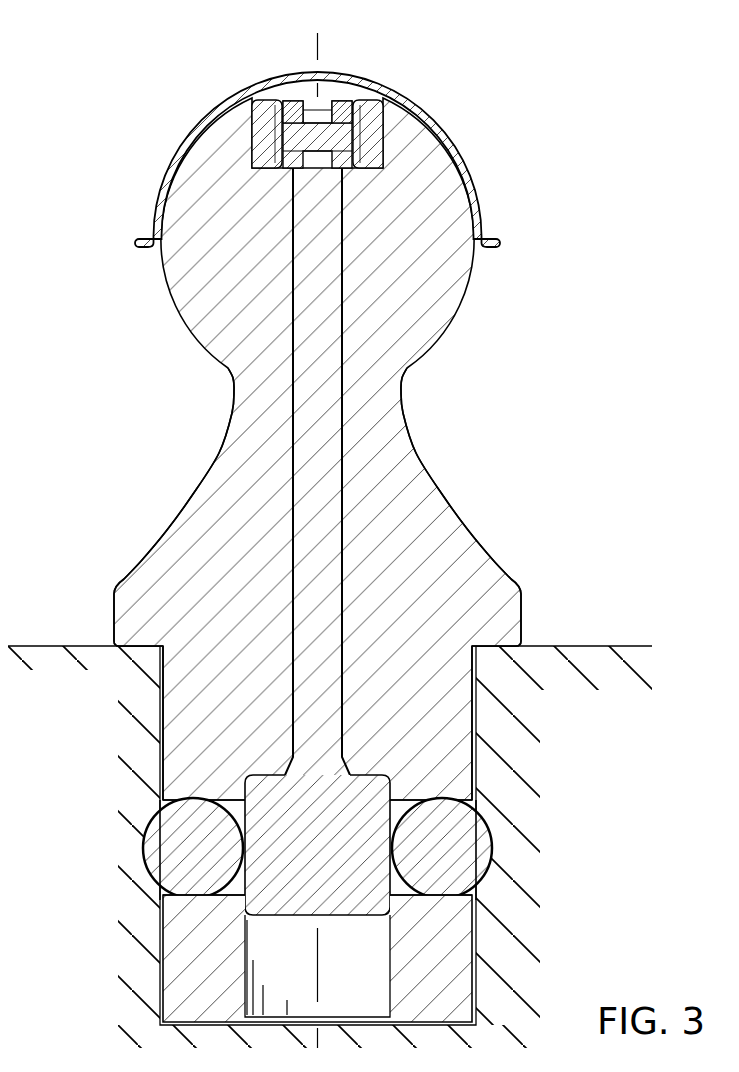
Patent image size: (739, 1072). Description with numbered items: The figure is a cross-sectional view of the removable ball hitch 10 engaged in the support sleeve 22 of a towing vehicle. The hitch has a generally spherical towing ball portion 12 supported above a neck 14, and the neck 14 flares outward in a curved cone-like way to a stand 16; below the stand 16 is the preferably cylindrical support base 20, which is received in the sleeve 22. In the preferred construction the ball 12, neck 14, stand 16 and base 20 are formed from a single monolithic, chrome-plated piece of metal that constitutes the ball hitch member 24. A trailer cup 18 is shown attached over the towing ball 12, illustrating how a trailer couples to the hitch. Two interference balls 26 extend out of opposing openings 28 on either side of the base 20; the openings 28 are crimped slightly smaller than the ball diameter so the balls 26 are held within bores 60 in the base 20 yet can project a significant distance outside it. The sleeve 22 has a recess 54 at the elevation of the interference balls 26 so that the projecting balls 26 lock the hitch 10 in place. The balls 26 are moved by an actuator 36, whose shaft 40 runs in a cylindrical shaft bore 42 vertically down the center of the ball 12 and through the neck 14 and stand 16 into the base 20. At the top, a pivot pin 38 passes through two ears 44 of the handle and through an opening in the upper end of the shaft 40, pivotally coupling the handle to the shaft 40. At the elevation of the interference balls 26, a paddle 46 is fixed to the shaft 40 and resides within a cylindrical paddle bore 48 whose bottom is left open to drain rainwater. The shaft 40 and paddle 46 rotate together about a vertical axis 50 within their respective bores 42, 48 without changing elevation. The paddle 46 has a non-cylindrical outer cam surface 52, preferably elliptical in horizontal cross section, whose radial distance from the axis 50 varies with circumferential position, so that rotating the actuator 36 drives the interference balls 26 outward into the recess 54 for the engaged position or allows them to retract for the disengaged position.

The removable ball hitch 10 is at (339, 534).
The towing ball portion 12 is at (440, 206).
The neck 14 is at (392, 378).
The stand 16 is at (493, 604).
The cup 18 is at (157, 190).
The support base 20 is at (180, 717).
The support sleeve 22 is at (548, 708).
The ball hitch member 24 is at (208, 455).
The interference balls 26 is at (180, 828).
The openings 28 is at (180, 797).
The actuator 36 is at (303, 633).
The pivot pin 38 is at (322, 137).
The shaft 40 is at (318, 248).
The shaft bore 42 is at (291, 533).
The ears 44 is at (294, 112).
The paddle 46 is at (287, 878).
The paddle bore 48 is at (347, 970).
The vertical axis 50 is at (318, 52).
The cam surface 52 is at (245, 808).
The recess 54 is at (143, 843).
The bores 60 is at (230, 885).